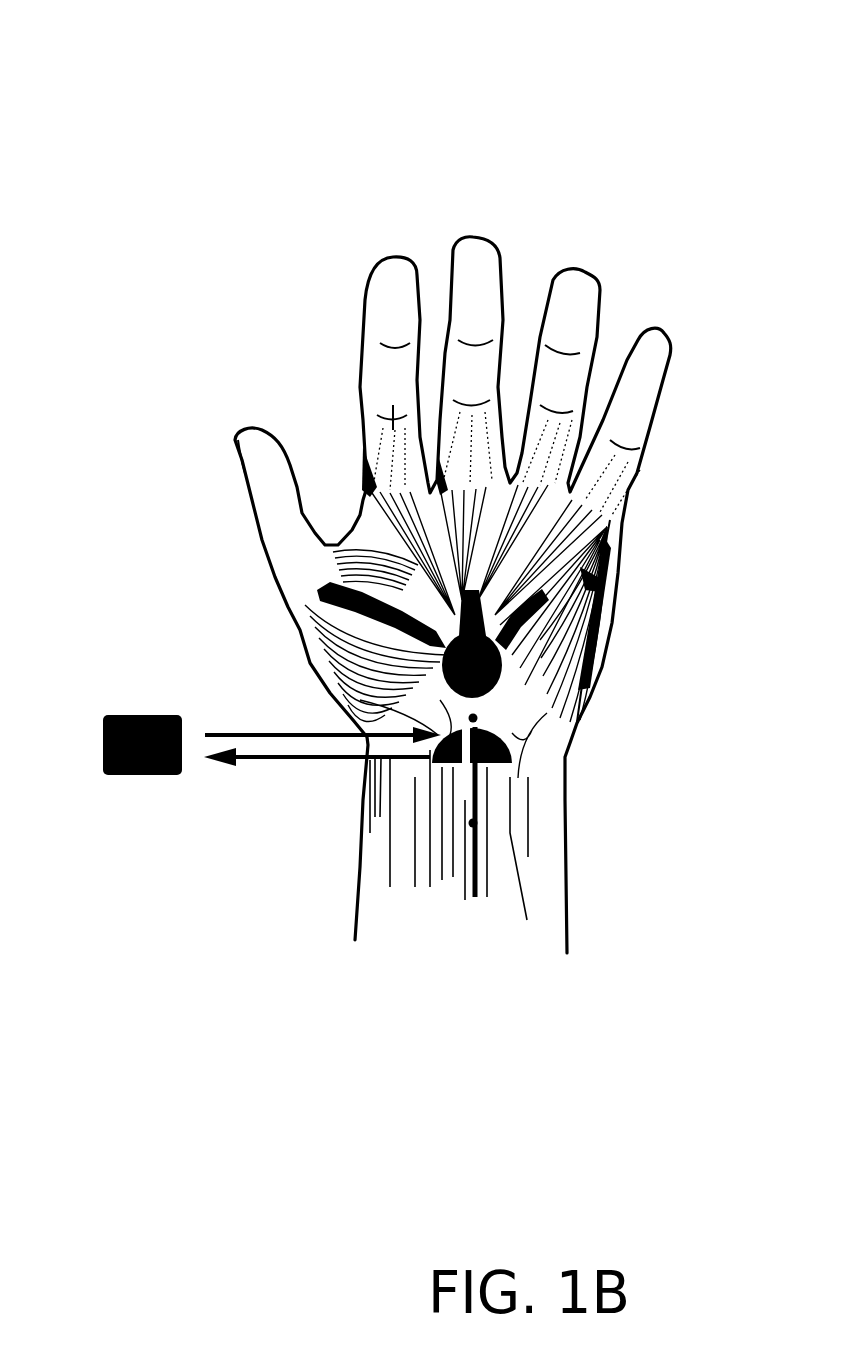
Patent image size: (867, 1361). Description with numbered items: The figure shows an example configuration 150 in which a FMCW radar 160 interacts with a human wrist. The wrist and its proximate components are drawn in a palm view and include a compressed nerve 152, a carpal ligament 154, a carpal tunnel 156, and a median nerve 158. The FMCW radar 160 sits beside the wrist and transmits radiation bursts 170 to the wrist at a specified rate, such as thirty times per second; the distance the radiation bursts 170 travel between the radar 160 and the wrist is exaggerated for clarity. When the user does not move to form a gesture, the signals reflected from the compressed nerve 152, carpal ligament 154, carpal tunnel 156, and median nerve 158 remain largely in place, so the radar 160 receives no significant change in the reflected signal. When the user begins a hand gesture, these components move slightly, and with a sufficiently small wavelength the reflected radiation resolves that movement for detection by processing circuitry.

The example configuration 150 is at (97, 50).
The compressed nerve 152 is at (498, 668).
The carpal ligament 154 is at (473, 718).
The carpal tunnel 156 is at (497, 762).
The median nerve 158 is at (473, 823).
The FMCW radar 160 is at (142, 708).
The radiation bursts 170 is at (276, 767).